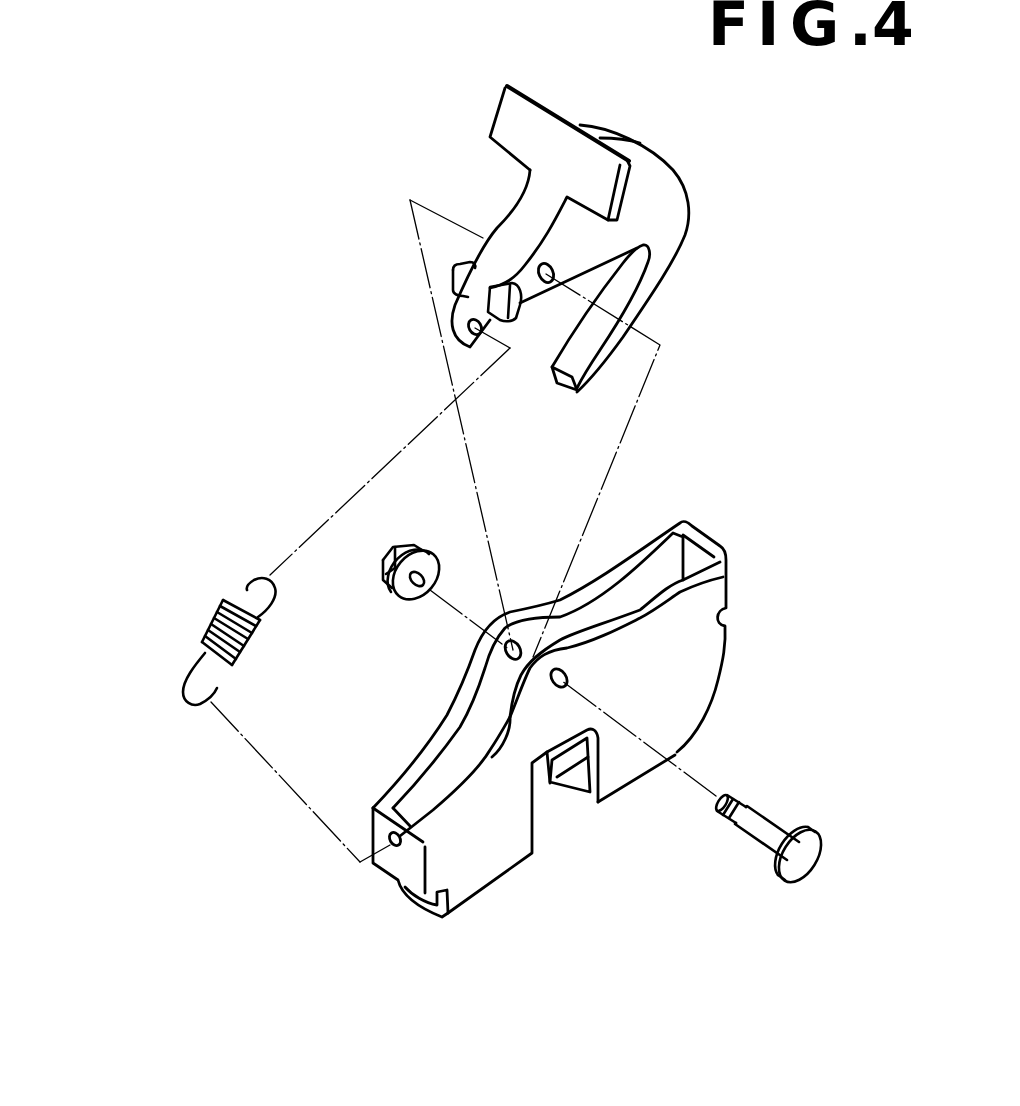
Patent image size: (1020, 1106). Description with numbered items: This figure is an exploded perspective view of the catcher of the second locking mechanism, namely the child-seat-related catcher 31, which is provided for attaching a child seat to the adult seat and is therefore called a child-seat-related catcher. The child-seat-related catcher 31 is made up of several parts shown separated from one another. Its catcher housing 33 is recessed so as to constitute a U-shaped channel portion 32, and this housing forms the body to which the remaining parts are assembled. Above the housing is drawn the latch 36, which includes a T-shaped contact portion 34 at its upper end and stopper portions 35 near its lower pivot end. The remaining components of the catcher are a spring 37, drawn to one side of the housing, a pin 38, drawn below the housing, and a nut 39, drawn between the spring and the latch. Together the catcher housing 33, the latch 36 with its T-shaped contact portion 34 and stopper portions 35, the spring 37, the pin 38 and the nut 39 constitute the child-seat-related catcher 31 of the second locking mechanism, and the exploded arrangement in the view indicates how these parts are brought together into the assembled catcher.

The child-seat-related catcher 31 is at (215, 232).
The U-shaped channel portion 32 is at (538, 803).
The catcher housing 33 is at (718, 678).
The T-shaped contact portion 34 is at (497, 115).
The stopper portions 35 is at (490, 308).
The latch 36 is at (692, 210).
The spring 37 is at (202, 633).
The pin 38 is at (778, 880).
The nut 39 is at (390, 550).